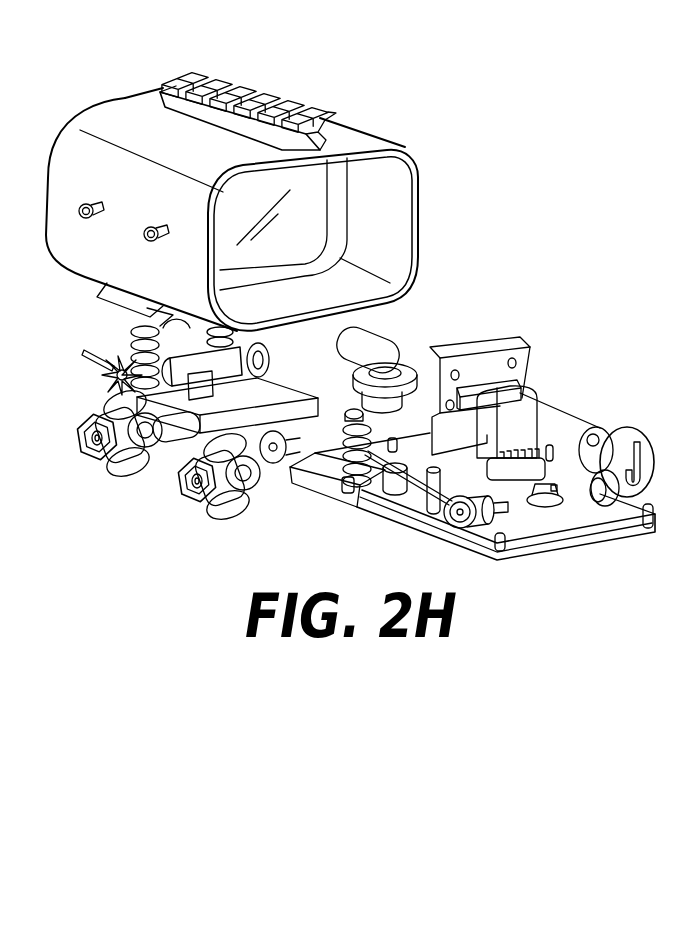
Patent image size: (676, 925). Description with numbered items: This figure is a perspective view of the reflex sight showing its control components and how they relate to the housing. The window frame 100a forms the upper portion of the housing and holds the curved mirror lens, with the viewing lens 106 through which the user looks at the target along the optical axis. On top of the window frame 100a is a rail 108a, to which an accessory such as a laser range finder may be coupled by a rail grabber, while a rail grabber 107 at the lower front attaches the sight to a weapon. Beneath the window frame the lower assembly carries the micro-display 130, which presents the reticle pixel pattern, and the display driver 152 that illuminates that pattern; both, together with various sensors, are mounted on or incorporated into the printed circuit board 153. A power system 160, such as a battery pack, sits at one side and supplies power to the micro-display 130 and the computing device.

The window frame 100a is at (404, 148).
The viewing lens 106 is at (316, 224).
The rail 108a is at (272, 92).
The rail grabber 107 is at (203, 507).
The micro-display 130 is at (493, 343).
The display driver 152 is at (494, 386).
The printed circuit board 153 is at (513, 487).
The power system 160 is at (585, 414).